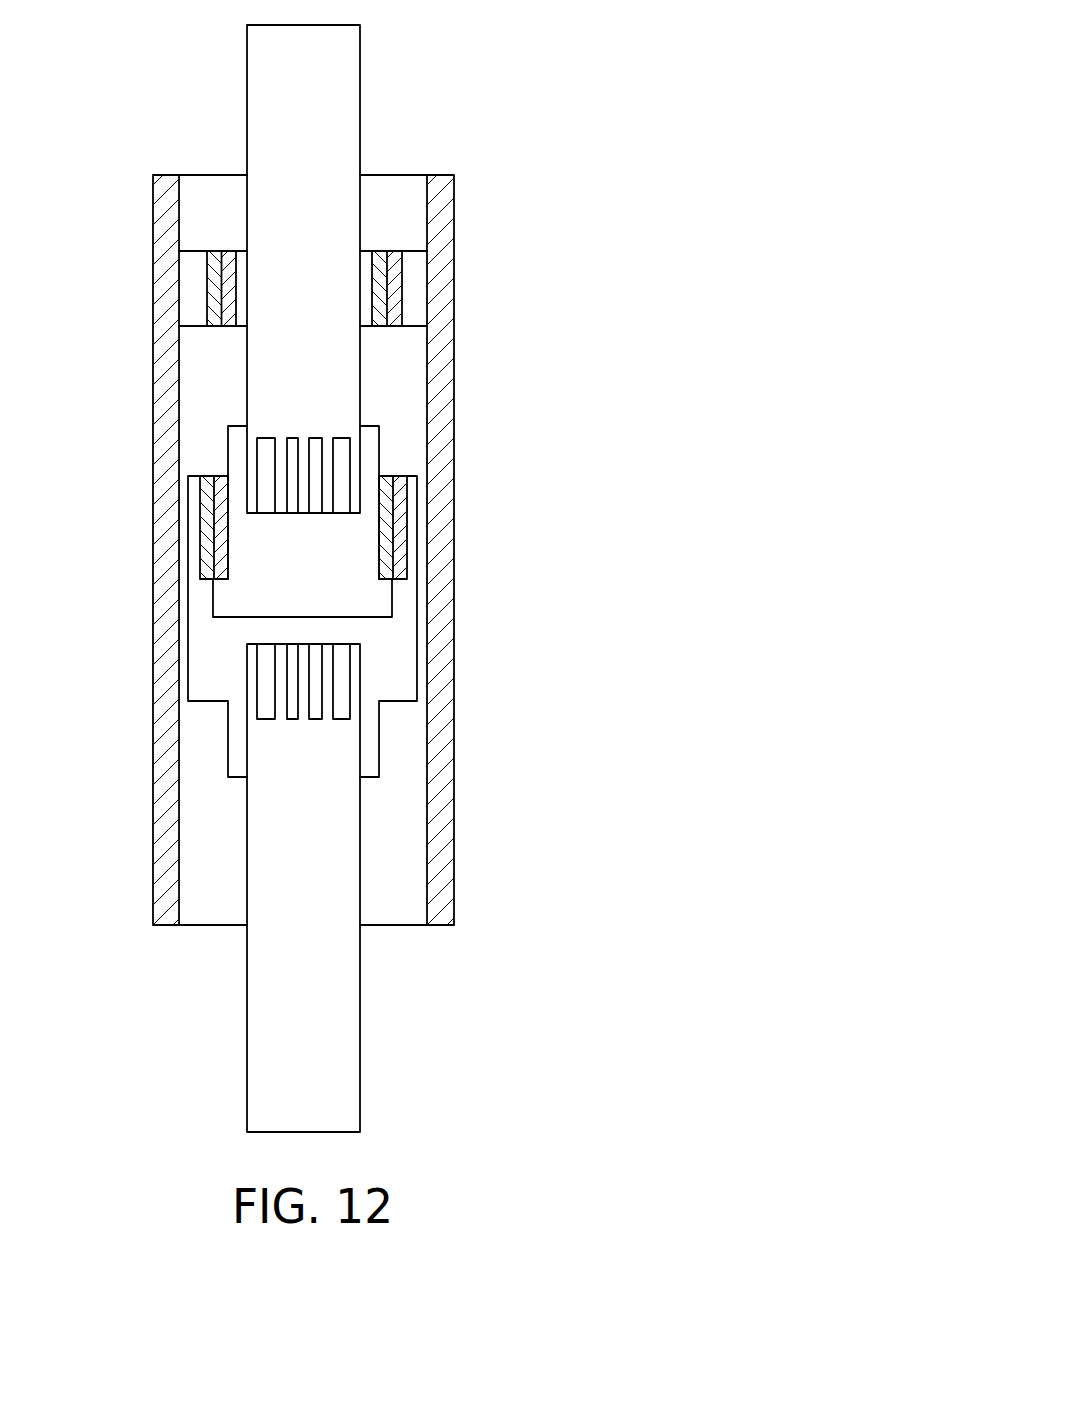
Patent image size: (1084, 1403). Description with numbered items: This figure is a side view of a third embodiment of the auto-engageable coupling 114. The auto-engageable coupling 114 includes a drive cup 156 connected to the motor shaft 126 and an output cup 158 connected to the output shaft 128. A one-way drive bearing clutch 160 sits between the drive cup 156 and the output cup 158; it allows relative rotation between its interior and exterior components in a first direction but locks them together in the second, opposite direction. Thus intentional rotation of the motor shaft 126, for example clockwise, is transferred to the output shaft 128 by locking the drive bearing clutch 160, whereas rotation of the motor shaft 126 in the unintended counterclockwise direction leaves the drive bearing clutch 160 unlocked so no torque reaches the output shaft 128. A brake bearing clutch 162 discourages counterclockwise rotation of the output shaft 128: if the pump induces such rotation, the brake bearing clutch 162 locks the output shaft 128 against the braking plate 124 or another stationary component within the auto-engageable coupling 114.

The auto-engageable coupling 114 is at (647, 228).
The braking plate 124 is at (418, 300).
The motor shaft 126 is at (326, 857).
The output shaft 128 is at (319, 103).
The drive cup 156 is at (410, 630).
The output cup 158 is at (367, 447).
The one-way drive bearing clutch 160 is at (393, 544).
The brake bearing clutch 162 is at (397, 278).